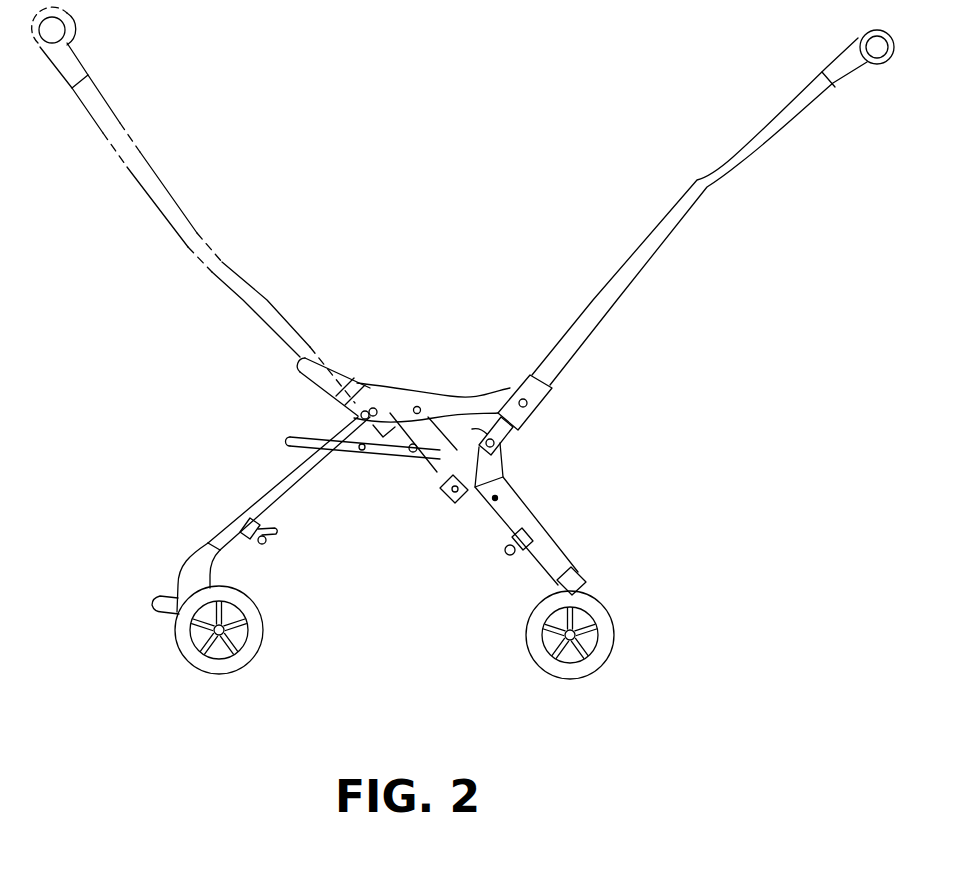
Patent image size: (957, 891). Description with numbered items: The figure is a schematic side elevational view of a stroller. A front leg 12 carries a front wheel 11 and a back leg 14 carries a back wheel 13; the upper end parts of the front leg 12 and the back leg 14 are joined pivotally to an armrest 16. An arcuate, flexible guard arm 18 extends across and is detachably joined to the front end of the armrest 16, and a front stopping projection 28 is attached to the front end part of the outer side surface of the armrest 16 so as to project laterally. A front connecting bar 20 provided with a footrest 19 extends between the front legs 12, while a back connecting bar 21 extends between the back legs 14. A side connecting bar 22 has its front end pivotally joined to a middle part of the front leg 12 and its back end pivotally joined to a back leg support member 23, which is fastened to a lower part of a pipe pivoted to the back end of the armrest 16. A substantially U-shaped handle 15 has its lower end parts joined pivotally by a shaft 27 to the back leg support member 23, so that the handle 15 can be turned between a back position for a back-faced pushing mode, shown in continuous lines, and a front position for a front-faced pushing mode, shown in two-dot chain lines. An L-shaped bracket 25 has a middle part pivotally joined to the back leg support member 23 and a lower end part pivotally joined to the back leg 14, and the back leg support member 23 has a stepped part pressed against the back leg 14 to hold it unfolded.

The front wheel 11 is at (255, 645).
The front leg 12 is at (270, 490).
The back wheel 13 is at (608, 638).
The back leg 14 is at (562, 553).
The handle 15 is at (738, 163).
The armrest 16 is at (437, 402).
The guard arm 18 is at (300, 369).
The footrest 19 is at (278, 535).
The front connecting bar 20 is at (265, 552).
The back connecting bar 21 is at (503, 553).
The side connecting bar 22 is at (377, 455).
The back leg support member 23 is at (443, 467).
The bracket 25 is at (490, 470).
The shaft 27 is at (457, 505).
The front stopping projection 28 is at (371, 409).